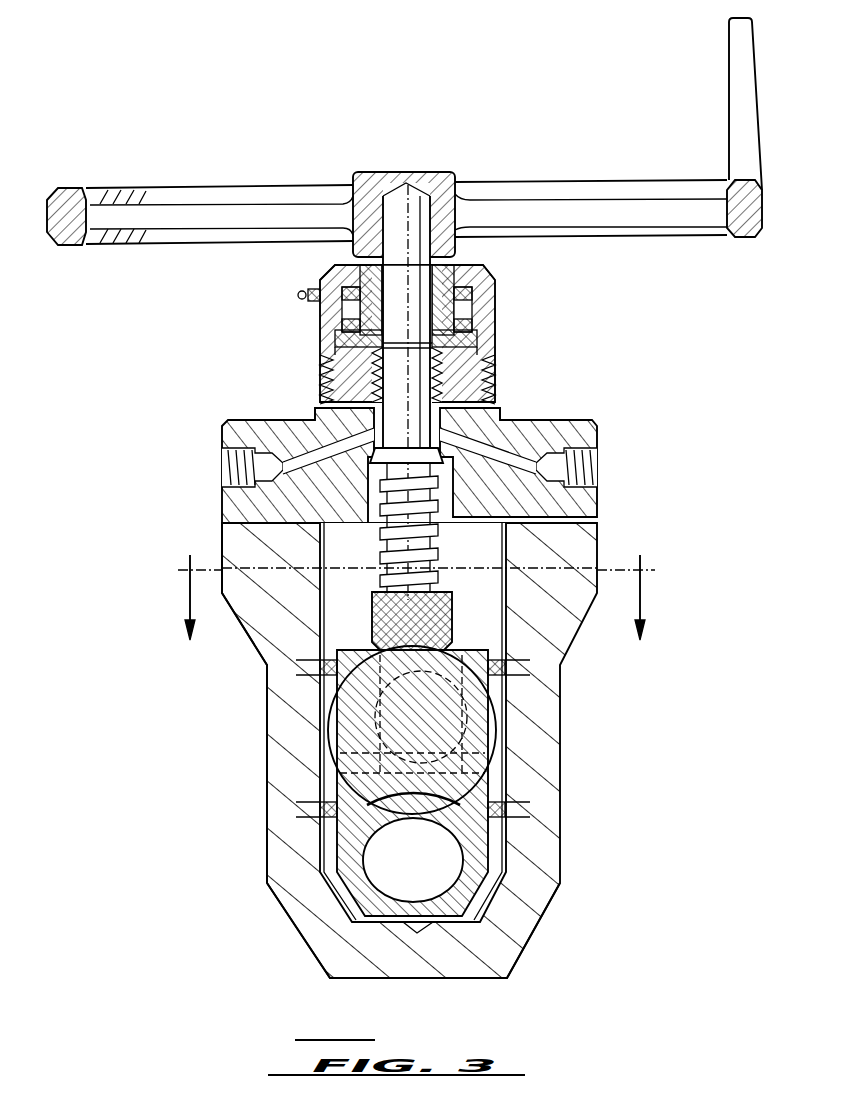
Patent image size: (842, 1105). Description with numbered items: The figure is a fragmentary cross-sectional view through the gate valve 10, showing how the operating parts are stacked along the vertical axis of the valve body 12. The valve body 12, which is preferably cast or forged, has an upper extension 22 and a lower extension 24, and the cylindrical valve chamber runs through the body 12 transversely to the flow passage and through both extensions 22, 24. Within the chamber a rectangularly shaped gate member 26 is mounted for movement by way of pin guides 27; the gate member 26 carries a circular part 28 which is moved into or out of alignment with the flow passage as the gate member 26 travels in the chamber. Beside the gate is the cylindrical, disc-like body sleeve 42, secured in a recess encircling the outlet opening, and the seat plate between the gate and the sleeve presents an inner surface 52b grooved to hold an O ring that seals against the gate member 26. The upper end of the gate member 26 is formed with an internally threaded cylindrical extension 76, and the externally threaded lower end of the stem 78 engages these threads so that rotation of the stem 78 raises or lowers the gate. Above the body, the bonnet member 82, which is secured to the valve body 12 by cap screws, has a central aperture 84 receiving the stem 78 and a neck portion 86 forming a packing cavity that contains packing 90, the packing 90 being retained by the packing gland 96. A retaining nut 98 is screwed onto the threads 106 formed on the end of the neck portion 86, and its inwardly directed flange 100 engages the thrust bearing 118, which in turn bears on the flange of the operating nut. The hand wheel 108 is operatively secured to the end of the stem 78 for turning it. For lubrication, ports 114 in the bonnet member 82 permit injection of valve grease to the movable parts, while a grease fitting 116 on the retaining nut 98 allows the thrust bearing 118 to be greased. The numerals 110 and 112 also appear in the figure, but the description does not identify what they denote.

The gate valve 10 is at (404, 498).
The valve body 12 is at (578, 543).
The upper extension 22 is at (236, 538).
The lower extension 24 is at (525, 925).
The gate member 26 is at (490, 790).
The pin guides 27 is at (492, 668).
The circular part 28 is at (455, 858).
The body sleeve 42 is at (512, 740).
The inner surface of the seat plate 52b is at (485, 666).
The cylindrical extension 76 is at (555, 500).
The stem 78 is at (400, 202).
The bonnet member 82 is at (598, 440).
The central aperture 84 is at (330, 407).
The neck portion 86 is at (322, 388).
The packing 90 is at (450, 372).
The packing gland 96 is at (492, 338).
The retaining nut 98 is at (490, 308).
The inwardly directed flange 100 is at (462, 268).
The threads 106 is at (496, 384).
The hand wheel 108 is at (513, 206).
The threaded port bore 110 is at (305, 468).
The left passage 112 is at (497, 428).
The ports 114 is at (497, 440).
The grease fitting 116 is at (300, 302).
The thrust bearing 118 is at (478, 320).